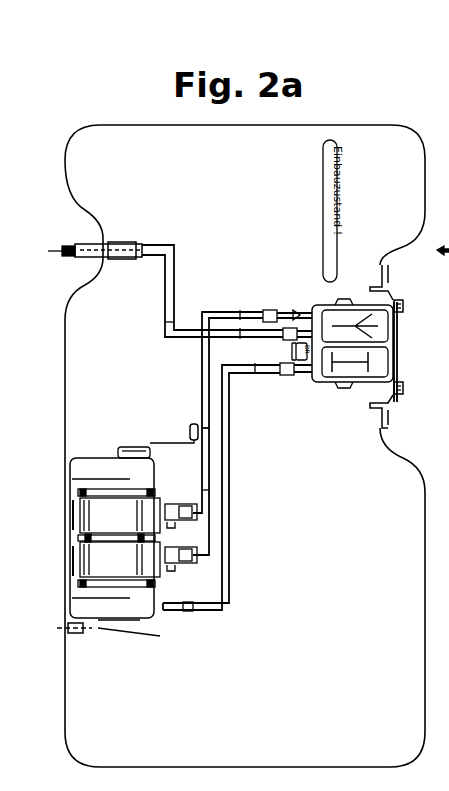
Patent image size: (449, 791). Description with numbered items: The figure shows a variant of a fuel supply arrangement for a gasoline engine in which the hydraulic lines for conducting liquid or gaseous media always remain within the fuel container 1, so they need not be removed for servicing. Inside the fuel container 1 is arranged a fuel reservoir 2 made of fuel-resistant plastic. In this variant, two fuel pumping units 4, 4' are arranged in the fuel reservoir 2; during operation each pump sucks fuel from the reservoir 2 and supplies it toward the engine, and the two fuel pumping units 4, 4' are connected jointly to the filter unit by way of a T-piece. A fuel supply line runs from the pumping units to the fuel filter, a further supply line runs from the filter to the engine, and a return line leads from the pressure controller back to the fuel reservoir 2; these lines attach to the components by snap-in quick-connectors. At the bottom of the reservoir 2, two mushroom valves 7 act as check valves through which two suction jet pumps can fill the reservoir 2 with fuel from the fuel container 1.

The fuel container 1 is at (205, 530).
The fuel reservoir 2 is at (100, 462).
The fuel pumping unit 4 is at (138, 500).
The second fuel pumping unit 4' is at (141, 568).
The mushroom valve 7 is at (52, 573).